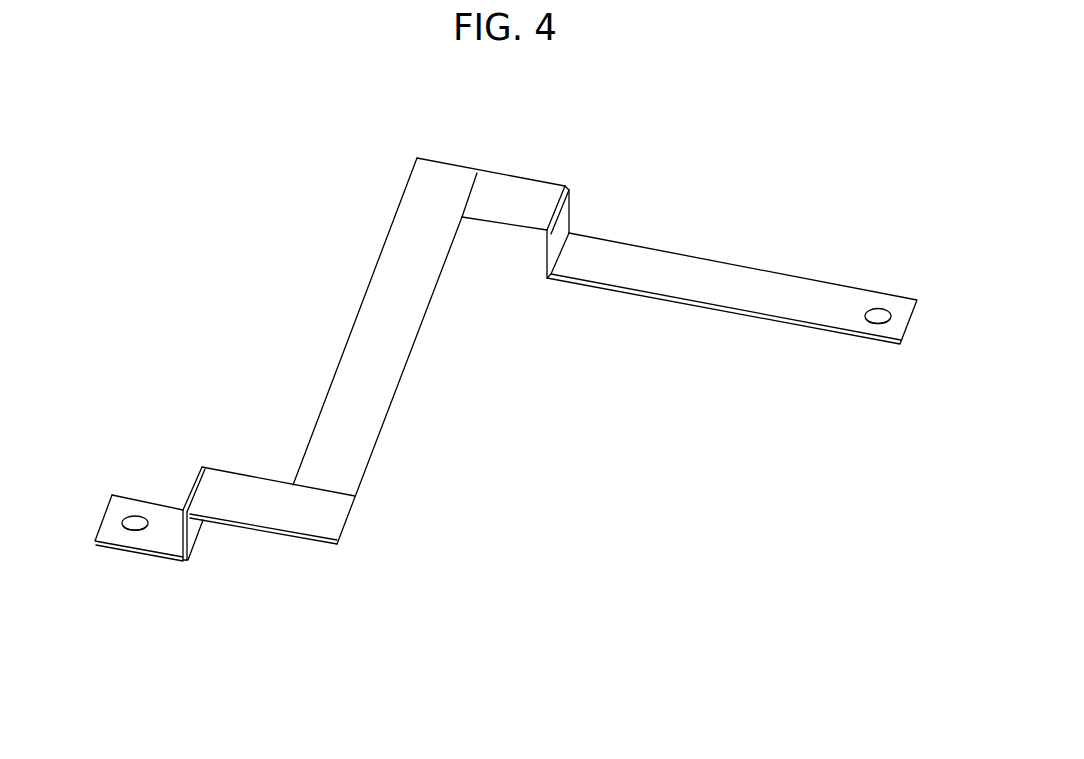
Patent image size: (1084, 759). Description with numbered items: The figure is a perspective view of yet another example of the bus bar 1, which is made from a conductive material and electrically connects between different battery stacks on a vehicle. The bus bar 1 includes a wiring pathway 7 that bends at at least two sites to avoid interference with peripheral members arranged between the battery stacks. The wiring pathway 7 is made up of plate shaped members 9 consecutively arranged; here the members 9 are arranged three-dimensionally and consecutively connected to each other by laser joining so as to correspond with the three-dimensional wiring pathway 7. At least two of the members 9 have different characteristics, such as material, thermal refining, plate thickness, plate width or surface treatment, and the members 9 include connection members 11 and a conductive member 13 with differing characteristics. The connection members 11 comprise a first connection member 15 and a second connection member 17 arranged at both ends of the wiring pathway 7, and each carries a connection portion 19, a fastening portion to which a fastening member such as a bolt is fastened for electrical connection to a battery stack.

The bus bar 1 is at (357, 222).
The wiring pathway 7 is at (527, 476).
The plate shaped member 9 is at (507, 198).
The connection member 11 is at (506, 439).
The conductive member 13 is at (433, 382).
The first connection member 15 is at (153, 537).
The second connection member 17 is at (698, 290).
The connection portion 19 is at (887, 308).